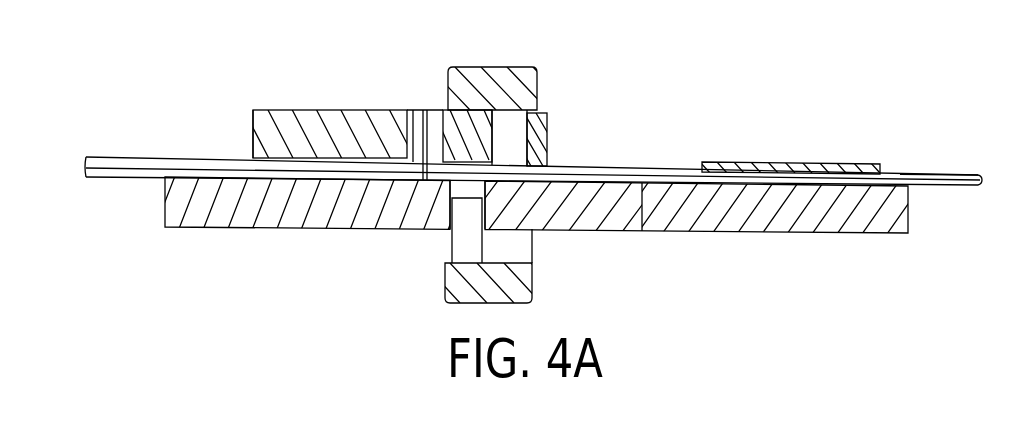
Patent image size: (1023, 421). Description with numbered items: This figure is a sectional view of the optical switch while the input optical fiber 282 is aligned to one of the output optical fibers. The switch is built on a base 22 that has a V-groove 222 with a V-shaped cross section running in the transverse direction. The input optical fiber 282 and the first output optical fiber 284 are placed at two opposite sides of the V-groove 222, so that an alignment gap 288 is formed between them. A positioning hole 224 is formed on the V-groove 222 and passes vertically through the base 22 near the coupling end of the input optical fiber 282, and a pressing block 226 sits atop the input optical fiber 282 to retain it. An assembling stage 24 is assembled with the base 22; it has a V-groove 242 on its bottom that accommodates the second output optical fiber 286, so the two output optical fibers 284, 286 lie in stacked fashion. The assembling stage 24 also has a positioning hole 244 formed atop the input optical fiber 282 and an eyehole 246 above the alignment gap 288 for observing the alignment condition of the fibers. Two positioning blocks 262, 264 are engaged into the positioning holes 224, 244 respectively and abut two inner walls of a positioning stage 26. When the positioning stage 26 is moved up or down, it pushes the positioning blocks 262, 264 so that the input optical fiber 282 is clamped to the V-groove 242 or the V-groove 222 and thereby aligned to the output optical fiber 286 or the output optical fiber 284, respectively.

The base 22 is at (775, 210).
The V-groove 222 is at (642, 190).
The positioning hole 224 is at (448, 228).
The pressing block 226 is at (785, 164).
The assembling stage 24 is at (328, 118).
The V-groove 242 is at (254, 121).
The positioning hole 244 is at (530, 138).
The eyehole 246 is at (407, 125).
The positioning stage 26 is at (518, 73).
The positioning block 262 is at (463, 235).
The positioning block 264 is at (513, 123).
The input optical fiber 282 is at (927, 176).
The first output optical fiber 284 is at (113, 174).
The second output optical fiber 286 is at (113, 162).
The alignment gap 288 is at (425, 112).